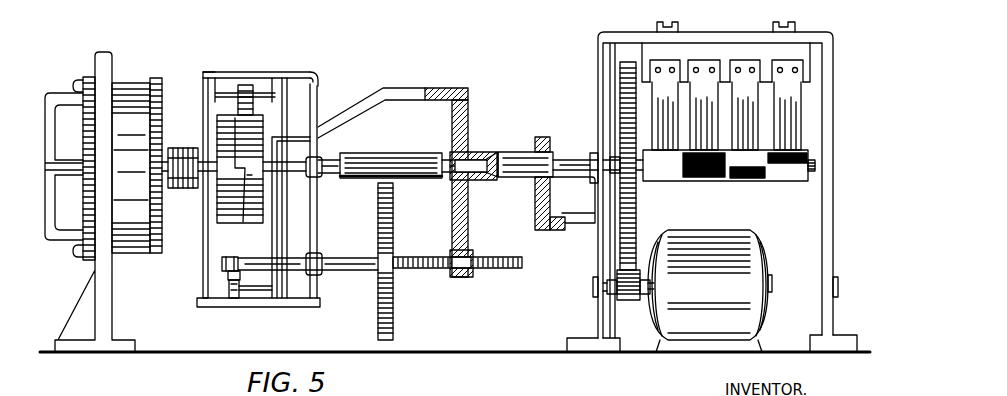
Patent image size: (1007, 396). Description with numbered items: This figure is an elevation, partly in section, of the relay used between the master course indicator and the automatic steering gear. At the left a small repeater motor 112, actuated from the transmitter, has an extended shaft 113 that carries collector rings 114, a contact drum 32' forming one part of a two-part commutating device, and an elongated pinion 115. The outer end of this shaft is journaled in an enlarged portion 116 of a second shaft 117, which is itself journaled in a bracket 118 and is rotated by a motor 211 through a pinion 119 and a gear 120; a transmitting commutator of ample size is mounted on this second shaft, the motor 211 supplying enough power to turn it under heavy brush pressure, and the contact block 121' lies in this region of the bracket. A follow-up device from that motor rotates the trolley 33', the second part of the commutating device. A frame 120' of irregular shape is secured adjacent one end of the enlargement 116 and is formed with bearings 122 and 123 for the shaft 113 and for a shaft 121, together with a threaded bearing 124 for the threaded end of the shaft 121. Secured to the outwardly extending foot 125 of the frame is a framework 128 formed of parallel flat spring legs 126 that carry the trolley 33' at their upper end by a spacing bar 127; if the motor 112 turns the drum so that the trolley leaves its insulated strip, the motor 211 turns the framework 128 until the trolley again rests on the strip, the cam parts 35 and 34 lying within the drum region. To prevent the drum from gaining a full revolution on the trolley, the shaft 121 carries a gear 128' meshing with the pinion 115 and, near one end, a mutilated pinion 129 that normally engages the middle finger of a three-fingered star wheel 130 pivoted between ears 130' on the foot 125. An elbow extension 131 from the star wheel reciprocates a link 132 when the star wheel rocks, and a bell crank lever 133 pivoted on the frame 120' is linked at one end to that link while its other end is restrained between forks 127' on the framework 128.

The repeater motor 112 is at (106, 168).
The collector rings 114 is at (196, 150).
The flat spring legs 126 is at (202, 232).
The framework 128 is at (200, 66).
The spacing bar 127 is at (256, 73).
The forks 127' is at (334, 76).
The bell crank lever 133 is at (318, 100).
The trolley 33' is at (253, 85).
The contact drum 32' is at (240, 182).
The cam slot 35 is at (233, 170).
The cam 34 is at (254, 180).
The link 132 is at (277, 194).
The bearing 122 is at (320, 178).
The shaft 113 is at (325, 158).
The elongated pinion 115 is at (395, 154).
The enlarged portion 116 is at (497, 153).
The second shaft 117 is at (571, 158).
The frame 120' is at (456, 182).
The gear 128' is at (407, 261).
The threaded bearing 124 is at (473, 256).
The shaft 121 is at (308, 253).
The bearing 123 is at (320, 273).
The mutilated pinion 129 is at (228, 258).
The star wheel 130 is at (224, 278).
The ears 130' is at (223, 290).
The elbow extension 131 is at (256, 280).
The foot 125 is at (237, 308).
The bracket 118 is at (600, 82).
The gear 120 is at (641, 166).
The pinion 119 is at (628, 301).
The contact block 121' is at (729, 180).
The motor 211 is at (710, 291).